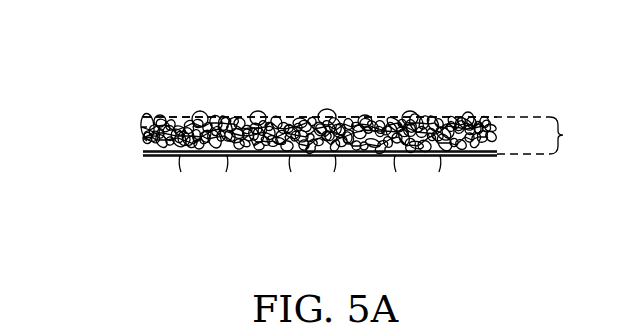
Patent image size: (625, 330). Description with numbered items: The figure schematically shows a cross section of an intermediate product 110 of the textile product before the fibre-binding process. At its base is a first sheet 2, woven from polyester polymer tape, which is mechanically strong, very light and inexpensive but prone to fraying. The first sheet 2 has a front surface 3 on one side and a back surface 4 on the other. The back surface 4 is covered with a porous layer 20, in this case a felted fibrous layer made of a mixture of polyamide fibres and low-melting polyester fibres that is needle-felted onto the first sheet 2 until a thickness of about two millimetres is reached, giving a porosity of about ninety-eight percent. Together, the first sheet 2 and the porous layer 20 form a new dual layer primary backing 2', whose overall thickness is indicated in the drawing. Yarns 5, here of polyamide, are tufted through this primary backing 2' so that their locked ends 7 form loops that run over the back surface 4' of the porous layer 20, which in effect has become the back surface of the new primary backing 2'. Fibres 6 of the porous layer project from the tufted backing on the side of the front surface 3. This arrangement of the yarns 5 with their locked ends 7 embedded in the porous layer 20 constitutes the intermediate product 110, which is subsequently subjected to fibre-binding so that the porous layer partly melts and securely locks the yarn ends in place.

The intermediate product 110 is at (122, 132).
The first sheet 2 is at (290, 176).
The dual layer primary backing 2' is at (568, 135).
The front surface 3 is at (477, 155).
The back surface 4 is at (335, 112).
The back surface of the porous layer 4' is at (320, 78).
The yarns 5 is at (203, 183).
The projecting fibers 6 is at (290, 164).
The locked ends 7 is at (326, 116).
The porous layer 20 is at (194, 115).